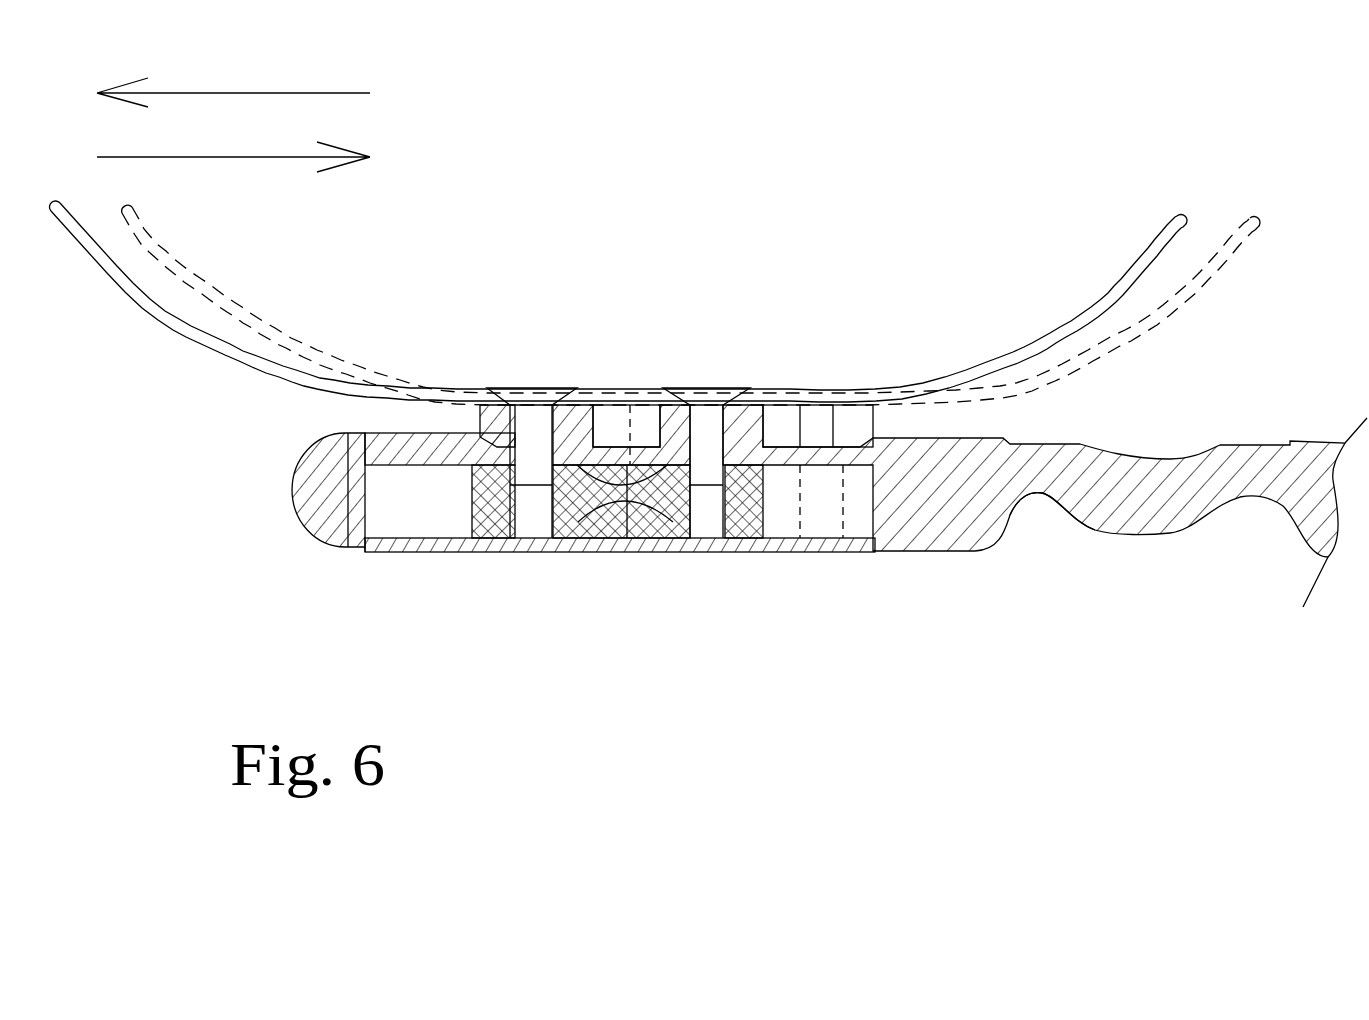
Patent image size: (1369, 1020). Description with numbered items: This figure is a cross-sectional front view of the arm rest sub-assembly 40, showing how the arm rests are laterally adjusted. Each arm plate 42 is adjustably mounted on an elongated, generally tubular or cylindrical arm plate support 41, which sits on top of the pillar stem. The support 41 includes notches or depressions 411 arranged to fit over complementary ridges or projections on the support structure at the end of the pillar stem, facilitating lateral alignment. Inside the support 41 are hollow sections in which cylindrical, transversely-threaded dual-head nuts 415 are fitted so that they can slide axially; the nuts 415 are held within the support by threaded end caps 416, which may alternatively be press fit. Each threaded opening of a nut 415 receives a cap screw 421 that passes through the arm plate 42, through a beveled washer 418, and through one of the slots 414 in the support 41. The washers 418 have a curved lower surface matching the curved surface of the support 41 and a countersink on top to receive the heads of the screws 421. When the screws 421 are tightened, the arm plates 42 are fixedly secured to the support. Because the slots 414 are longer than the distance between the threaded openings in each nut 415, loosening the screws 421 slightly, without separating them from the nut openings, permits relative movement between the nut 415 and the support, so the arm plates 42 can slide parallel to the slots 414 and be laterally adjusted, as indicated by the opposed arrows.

The arm rest sub-assembly 40 is at (822, 250).
The arm plate support 41 is at (1172, 523).
The notches or depressions 411 is at (1040, 493).
The slots 414 is at (838, 440).
The dual-head nuts 415 is at (576, 520).
The threaded end caps 416 is at (292, 494).
The beveled washers 418 is at (470, 467).
The arm plates 42 is at (346, 388).
The screws 421 is at (688, 400).